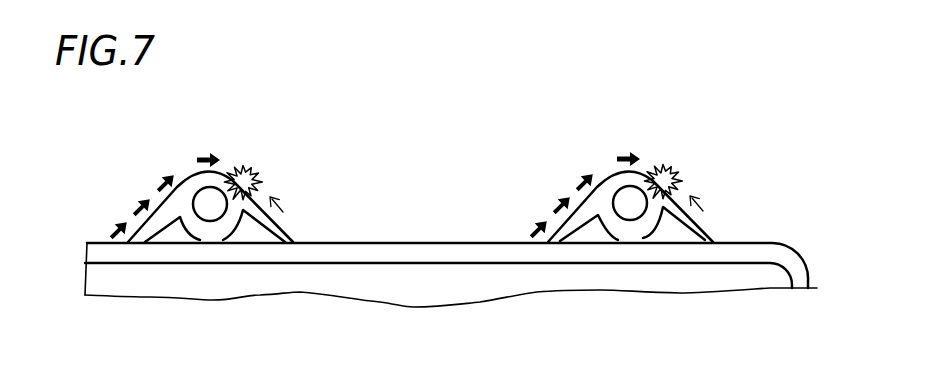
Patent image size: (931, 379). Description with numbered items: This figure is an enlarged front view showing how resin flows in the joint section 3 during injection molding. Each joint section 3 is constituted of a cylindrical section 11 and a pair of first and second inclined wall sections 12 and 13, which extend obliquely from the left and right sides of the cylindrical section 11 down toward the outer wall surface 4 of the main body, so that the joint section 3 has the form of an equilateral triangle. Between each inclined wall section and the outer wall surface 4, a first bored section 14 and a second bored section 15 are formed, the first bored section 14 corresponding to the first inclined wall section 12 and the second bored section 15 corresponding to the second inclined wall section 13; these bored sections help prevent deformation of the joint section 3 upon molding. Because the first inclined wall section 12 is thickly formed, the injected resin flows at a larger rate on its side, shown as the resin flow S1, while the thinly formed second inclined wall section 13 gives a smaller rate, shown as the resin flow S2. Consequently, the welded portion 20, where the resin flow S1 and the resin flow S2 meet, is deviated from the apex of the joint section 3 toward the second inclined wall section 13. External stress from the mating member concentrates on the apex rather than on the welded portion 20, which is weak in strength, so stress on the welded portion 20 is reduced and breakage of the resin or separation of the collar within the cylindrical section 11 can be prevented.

The joint section 3 is at (183, 166).
The outer wall surface 4 is at (433, 256).
The cylindrical section 11 is at (209, 173).
The first inclined wall section 12 is at (142, 245).
The second inclined wall section 13 is at (283, 243).
The first bored section 14 is at (177, 237).
The second bored section 15 is at (247, 235).
The welded portion 20 is at (262, 172).
The resin flow S1 is at (163, 177).
The resin flow S2 is at (300, 224).